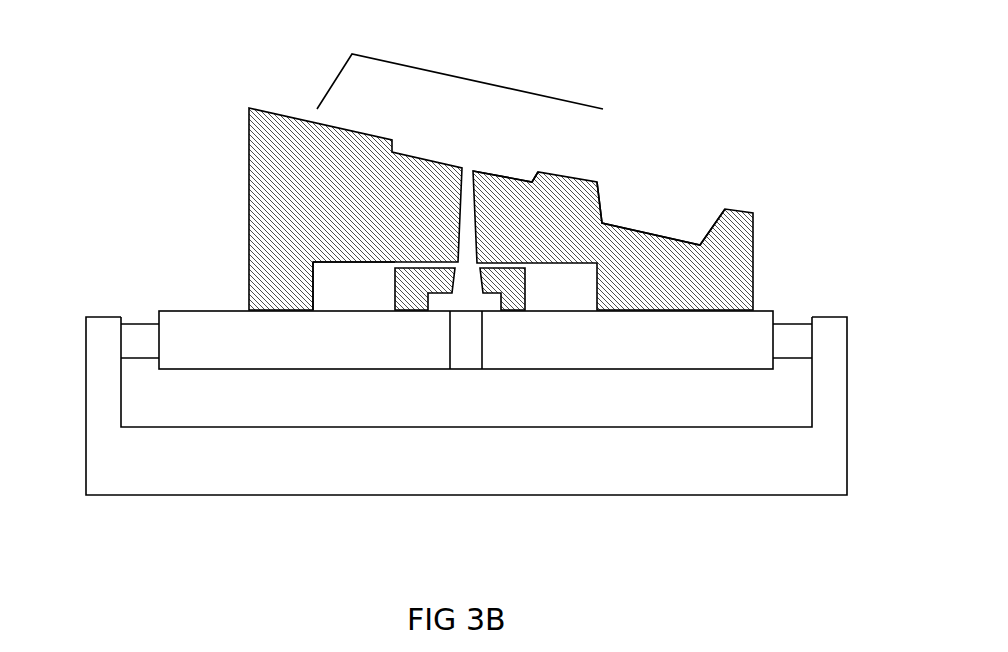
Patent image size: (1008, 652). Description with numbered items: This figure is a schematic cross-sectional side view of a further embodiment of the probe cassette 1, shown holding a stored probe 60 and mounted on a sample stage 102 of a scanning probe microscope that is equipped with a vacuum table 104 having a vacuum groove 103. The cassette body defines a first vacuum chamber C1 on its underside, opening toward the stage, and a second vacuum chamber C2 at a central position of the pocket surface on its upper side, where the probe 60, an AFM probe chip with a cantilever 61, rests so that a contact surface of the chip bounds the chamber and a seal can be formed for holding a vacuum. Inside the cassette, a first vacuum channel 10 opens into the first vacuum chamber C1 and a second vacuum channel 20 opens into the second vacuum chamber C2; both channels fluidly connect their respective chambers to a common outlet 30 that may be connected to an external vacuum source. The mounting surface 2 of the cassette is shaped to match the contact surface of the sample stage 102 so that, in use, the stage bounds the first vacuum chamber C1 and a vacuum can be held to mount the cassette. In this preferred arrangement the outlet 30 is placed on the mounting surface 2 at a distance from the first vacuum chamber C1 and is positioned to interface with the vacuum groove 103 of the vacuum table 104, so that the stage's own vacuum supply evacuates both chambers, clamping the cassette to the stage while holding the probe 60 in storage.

The probe cassette 1 is at (124, 98).
The mounting surface 2 is at (293, 313).
The first vacuum channel 10 is at (430, 262).
The second vacuum channel 20 is at (460, 208).
The outlet 30 is at (468, 300).
The probe 60 is at (515, 87).
The cantilever 61 is at (688, 188).
The first vacuum chamber C1 is at (338, 277).
The second vacuum chamber C2 is at (516, 172).
The sample stage 102 is at (85, 515).
The vacuum groove 103 is at (465, 372).
The vacuum table 104 is at (280, 384).